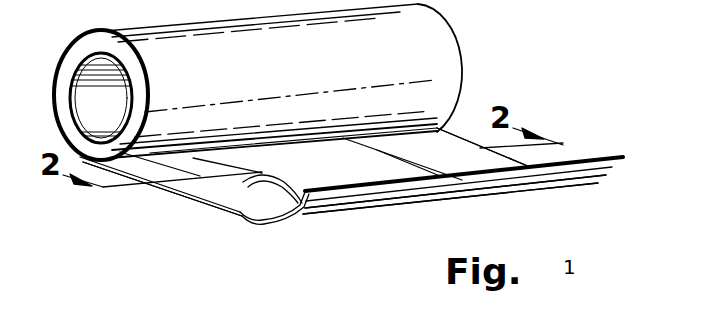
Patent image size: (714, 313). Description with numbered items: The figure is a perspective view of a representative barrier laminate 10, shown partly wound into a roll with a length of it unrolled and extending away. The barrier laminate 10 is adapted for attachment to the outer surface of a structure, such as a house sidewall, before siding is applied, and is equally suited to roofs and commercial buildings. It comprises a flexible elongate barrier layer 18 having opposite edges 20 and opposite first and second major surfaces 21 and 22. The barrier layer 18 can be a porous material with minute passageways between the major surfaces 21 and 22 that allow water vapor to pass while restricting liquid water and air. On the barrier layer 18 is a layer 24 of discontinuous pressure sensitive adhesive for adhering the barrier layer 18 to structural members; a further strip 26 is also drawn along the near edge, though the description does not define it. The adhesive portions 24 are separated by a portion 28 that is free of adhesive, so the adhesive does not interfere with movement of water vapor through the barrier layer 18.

The barrier laminate 10 is at (548, 62).
The barrier layer 18 is at (424, 207).
The opposite edges 20 is at (221, 213).
The first major surface 21 is at (236, 214).
The second major surface 22 is at (486, 192).
The layer of discontinuous pressure sensitive adhesive 24 is at (172, 190).
The strip 26 is at (355, 196).
The adhesive-free portion 28 is at (336, 176).